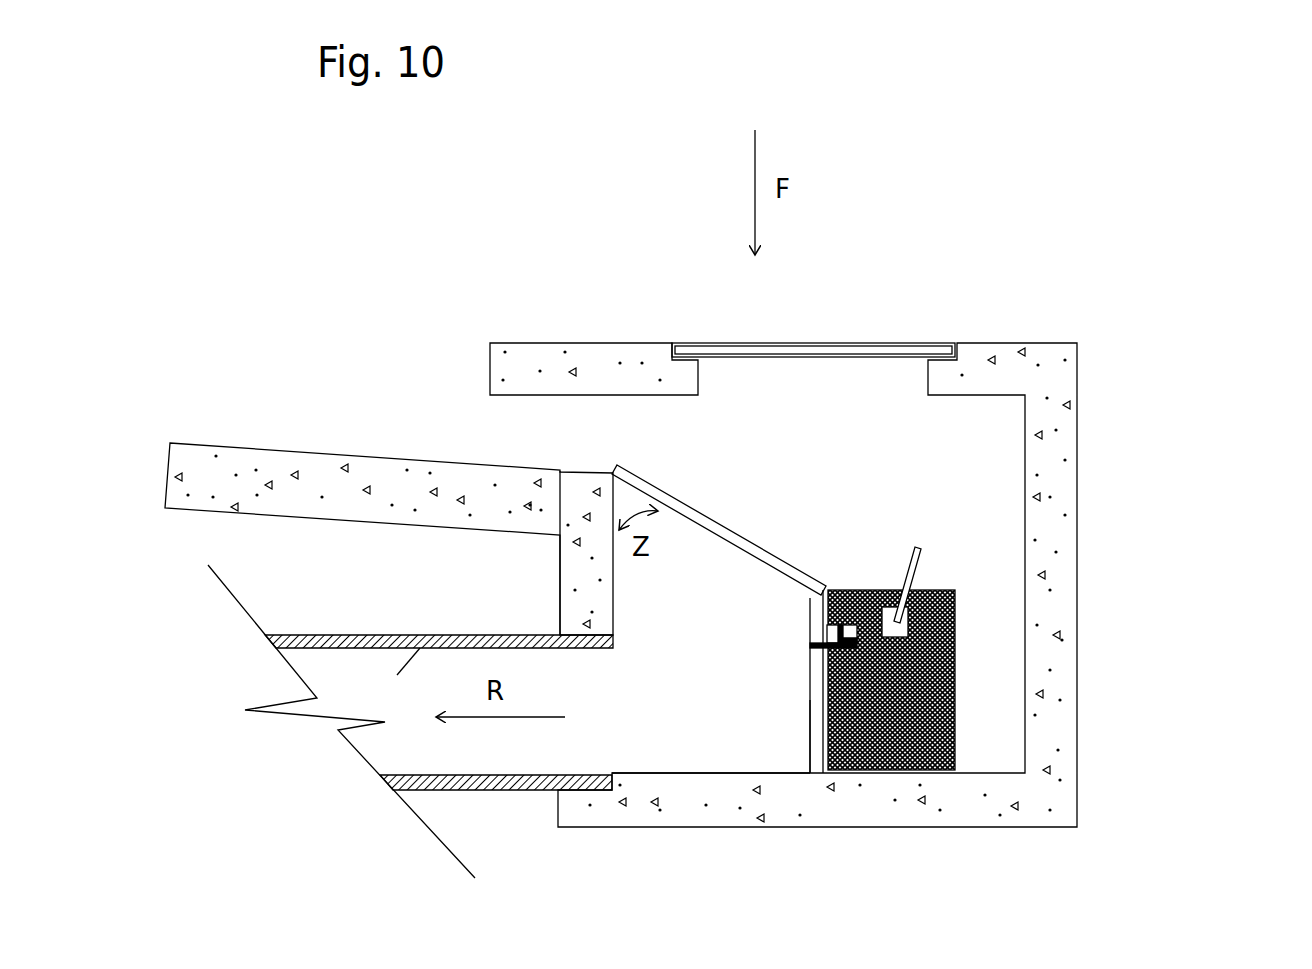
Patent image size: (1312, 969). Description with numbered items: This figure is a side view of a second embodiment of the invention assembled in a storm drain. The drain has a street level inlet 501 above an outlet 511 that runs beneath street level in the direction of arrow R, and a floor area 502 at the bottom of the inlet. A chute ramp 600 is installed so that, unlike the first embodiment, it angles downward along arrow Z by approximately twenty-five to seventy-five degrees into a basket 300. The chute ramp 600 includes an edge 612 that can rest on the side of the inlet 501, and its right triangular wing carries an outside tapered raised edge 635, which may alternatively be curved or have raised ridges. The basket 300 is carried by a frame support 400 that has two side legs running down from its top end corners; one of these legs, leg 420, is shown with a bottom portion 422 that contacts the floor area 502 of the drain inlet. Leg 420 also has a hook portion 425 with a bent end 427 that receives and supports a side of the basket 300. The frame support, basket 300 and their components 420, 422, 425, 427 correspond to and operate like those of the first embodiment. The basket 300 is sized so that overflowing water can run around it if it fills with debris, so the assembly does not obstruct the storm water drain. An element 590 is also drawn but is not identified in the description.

The basket 300 is at (955, 650).
The frame support 400 is at (813, 603).
The side leg 420 is at (812, 727).
The bottom portion 422 is at (785, 748).
The hook portion 425 is at (810, 652).
The bent end 427 is at (812, 640).
The street level inlet 501 is at (303, 463).
The floor area 502 is at (690, 750).
The outlet 511 is at (397, 675).
The cover plate 590 is at (845, 345).
The chute ramp 600 is at (767, 548).
The edge 612 is at (612, 470).
The outside tapered raised edge 635 is at (693, 510).